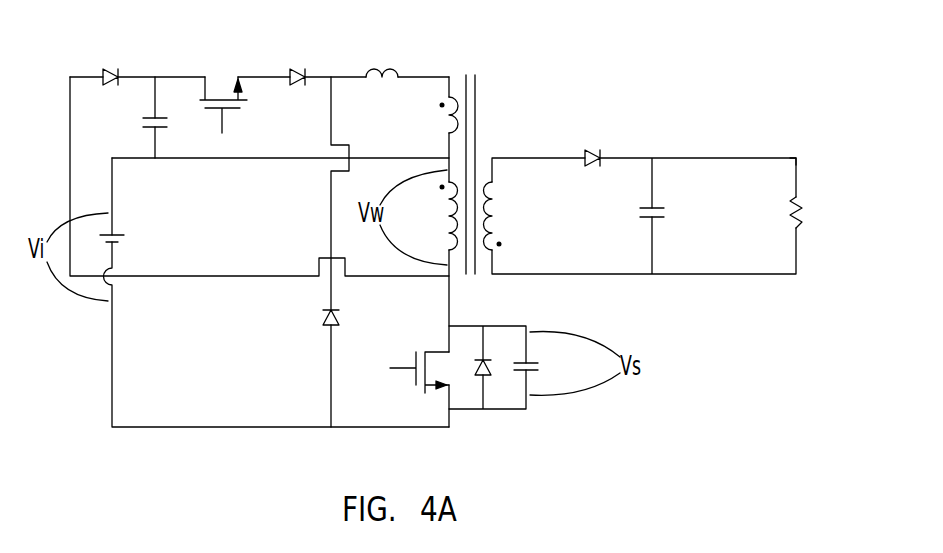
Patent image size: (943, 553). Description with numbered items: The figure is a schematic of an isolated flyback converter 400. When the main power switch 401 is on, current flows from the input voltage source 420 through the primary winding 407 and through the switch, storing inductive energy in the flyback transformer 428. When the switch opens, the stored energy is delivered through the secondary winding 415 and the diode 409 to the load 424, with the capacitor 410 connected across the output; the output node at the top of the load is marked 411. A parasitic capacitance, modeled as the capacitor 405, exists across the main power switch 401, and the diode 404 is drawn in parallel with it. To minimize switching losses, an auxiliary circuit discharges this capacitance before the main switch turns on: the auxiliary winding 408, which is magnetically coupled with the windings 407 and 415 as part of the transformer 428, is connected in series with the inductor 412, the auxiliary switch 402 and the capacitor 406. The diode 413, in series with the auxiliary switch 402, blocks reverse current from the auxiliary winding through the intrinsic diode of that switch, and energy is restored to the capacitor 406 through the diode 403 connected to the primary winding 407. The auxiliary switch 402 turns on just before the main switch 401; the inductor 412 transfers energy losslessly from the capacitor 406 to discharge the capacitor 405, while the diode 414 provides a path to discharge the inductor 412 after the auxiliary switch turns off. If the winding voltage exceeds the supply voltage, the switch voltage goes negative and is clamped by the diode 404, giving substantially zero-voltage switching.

The isolated flyback converter 400 is at (559, 63).
The main power switch 401 is at (409, 366).
The auxiliary switch 402 is at (223, 81).
The diode 403 is at (109, 67).
The diode 404 is at (484, 375).
The capacitor 405 is at (541, 366).
The capacitor 406 is at (140, 122).
The primary winding 407 is at (450, 245).
The auxiliary winding 408 is at (447, 124).
The diode 409 is at (593, 151).
The capacitor 410 is at (668, 215).
The output terminal 411 is at (794, 156).
The inductor 412 is at (378, 66).
The diode 413 is at (297, 68).
The diode 414 is at (322, 316).
The secondary winding 415 is at (486, 226).
The input voltage source 420 is at (125, 240).
The load 424 is at (803, 207).
The flyback transformer 428 is at (478, 84).